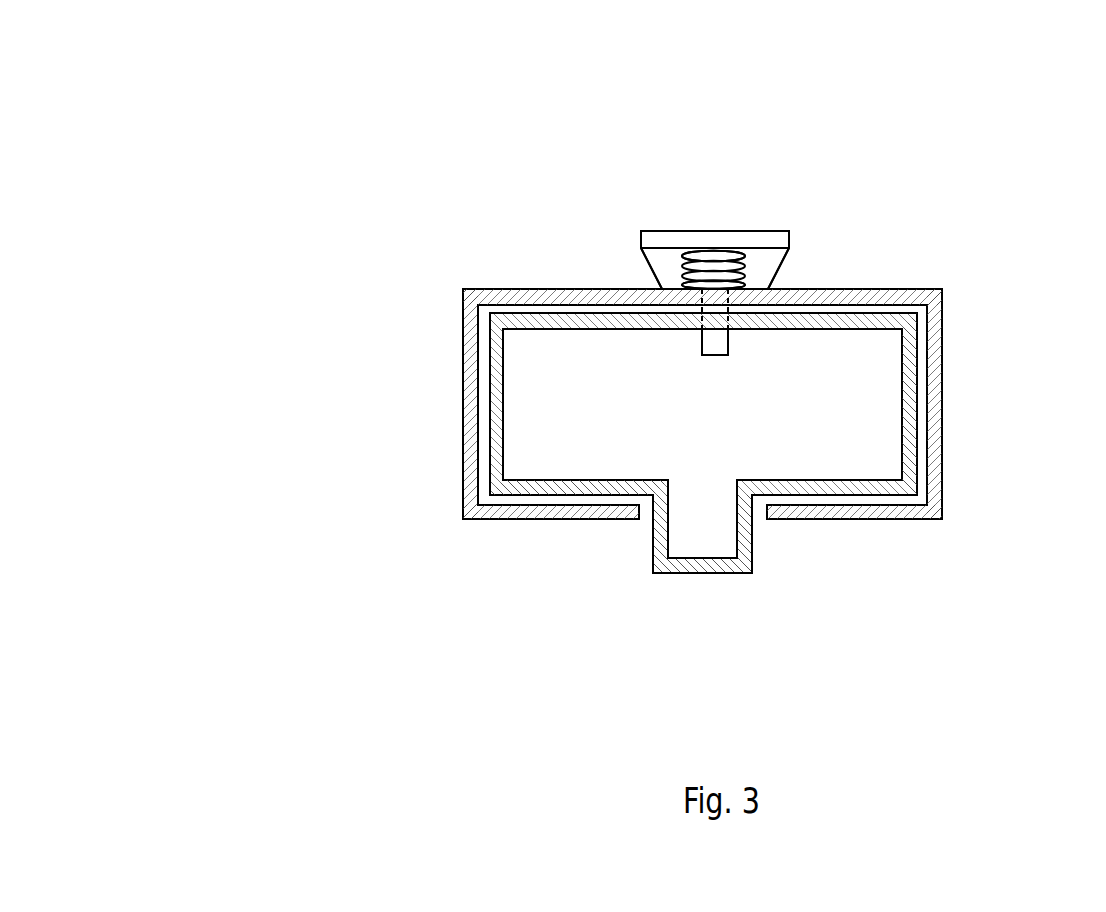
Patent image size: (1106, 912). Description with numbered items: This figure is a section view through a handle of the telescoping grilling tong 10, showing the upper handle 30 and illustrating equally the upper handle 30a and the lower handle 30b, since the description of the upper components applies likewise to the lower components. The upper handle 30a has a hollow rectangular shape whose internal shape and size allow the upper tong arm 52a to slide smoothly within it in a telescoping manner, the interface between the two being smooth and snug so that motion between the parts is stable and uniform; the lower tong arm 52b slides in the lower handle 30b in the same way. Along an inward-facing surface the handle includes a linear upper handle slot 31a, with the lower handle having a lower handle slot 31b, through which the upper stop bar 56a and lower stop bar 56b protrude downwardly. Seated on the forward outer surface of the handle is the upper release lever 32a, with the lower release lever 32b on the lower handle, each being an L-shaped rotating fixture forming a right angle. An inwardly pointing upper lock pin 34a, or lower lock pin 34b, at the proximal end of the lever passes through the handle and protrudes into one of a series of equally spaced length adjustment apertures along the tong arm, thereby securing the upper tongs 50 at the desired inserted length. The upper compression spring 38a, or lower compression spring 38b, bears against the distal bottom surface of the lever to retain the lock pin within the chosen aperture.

The telescoping grilling tong 10 is at (264, 106).
The upper handle 30 is at (463, 460).
The upper handle 30a is at (863, 296).
The lower handle 30b is at (942, 429).
The upper handle slot 31a is at (644, 519).
The lower handle slot 31b is at (760, 520).
The upper release lever 32a is at (666, 237).
The lower release lever 32b is at (715, 260).
The upper lock pin 34a is at (715, 357).
The lower lock pin 34b is at (715, 342).
The upper compression spring 38a is at (730, 258).
The lower compression spring 38b is at (713, 270).
The upper tongs 50 is at (478, 368).
The upper tong arm 52a is at (903, 363).
The lower tong arm 52b is at (512, 487).
The upper stop bar 56a is at (653, 555).
The lower stop bar 56b is at (702, 534).